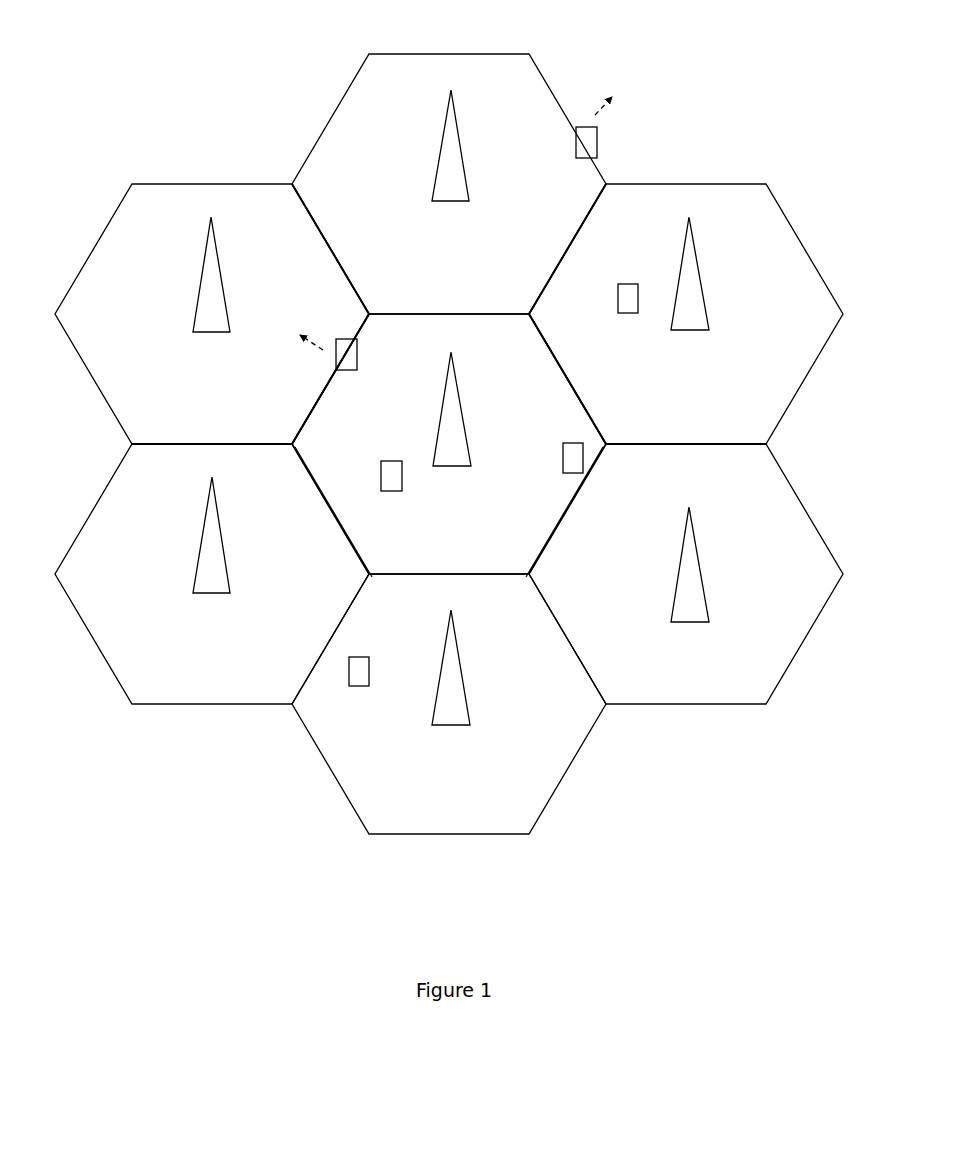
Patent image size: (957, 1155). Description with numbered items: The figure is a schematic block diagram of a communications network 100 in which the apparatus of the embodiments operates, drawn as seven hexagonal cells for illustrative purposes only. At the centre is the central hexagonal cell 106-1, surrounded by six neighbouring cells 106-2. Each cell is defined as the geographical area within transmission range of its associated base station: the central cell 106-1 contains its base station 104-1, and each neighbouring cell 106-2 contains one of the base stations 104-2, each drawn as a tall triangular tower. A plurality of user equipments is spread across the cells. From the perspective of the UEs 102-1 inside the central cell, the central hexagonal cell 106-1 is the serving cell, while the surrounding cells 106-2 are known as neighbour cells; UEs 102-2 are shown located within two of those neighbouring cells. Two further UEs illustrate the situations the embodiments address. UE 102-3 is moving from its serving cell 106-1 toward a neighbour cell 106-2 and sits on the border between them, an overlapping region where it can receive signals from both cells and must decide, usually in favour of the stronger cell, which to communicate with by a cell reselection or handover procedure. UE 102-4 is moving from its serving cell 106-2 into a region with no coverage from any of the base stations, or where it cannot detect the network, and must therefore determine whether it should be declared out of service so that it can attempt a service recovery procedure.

The communications network 100 is at (250, 80).
The UEs in the central cell 102-1 is at (380, 462).
The UEs in neighbour cells 102-2 is at (625, 282).
The UE moving between cells 102-3 is at (337, 340).
The UE moving out of coverage 102-4 is at (598, 140).
The base station of the central cell 104-1 is at (460, 400).
The base stations of neighbour cells 104-2 is at (442, 142).
The central hexagonal cell 106-1 is at (545, 403).
The neighbouring cells 106-2 is at (513, 88).